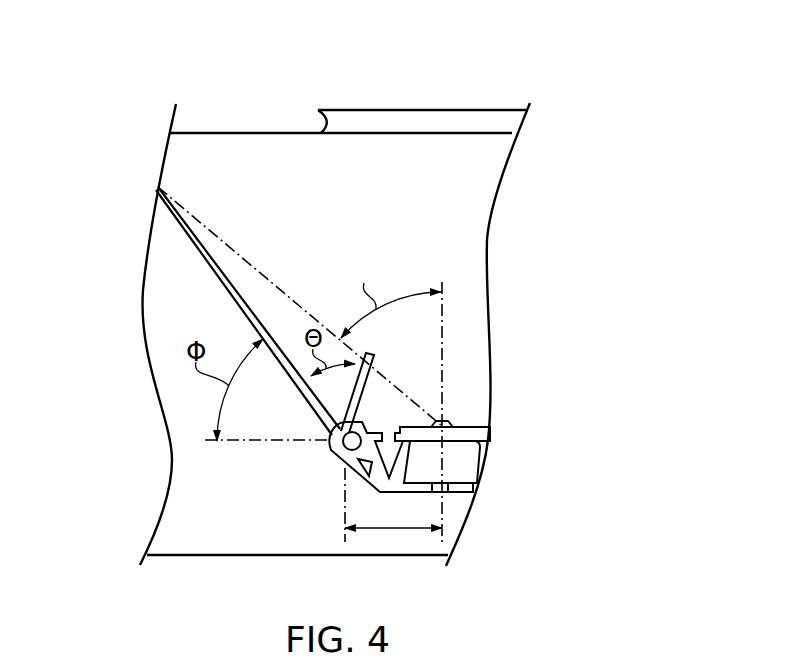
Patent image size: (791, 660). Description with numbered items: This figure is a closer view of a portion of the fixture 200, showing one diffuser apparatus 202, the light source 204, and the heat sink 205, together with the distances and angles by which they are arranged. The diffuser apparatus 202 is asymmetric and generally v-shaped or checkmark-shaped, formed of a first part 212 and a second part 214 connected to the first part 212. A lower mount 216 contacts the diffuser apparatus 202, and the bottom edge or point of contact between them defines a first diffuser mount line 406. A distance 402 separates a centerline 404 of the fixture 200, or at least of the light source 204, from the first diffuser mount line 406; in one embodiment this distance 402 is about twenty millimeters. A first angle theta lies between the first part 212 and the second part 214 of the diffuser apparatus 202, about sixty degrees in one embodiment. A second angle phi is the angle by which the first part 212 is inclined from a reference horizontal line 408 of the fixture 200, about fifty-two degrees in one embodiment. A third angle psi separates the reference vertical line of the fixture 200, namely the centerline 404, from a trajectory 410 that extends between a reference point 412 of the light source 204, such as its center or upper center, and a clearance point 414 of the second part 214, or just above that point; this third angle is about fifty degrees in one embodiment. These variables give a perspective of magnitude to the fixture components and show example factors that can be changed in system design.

The fixture 200 is at (517, 78).
The diffuser apparatus 202 is at (309, 407).
The light source 204 is at (481, 425).
The heat sink 205 is at (456, 495).
The first part 212 is at (198, 251).
The second part 214 is at (362, 392).
The lower mount 216 is at (332, 452).
The distance 402 is at (392, 533).
The centerline 404 is at (443, 320).
The first diffuser mount line 406 is at (340, 508).
The reference horizontal line 408 is at (240, 448).
The trajectory 410 is at (282, 287).
The reference point 412 is at (449, 420).
The clearance point 414 is at (369, 353).